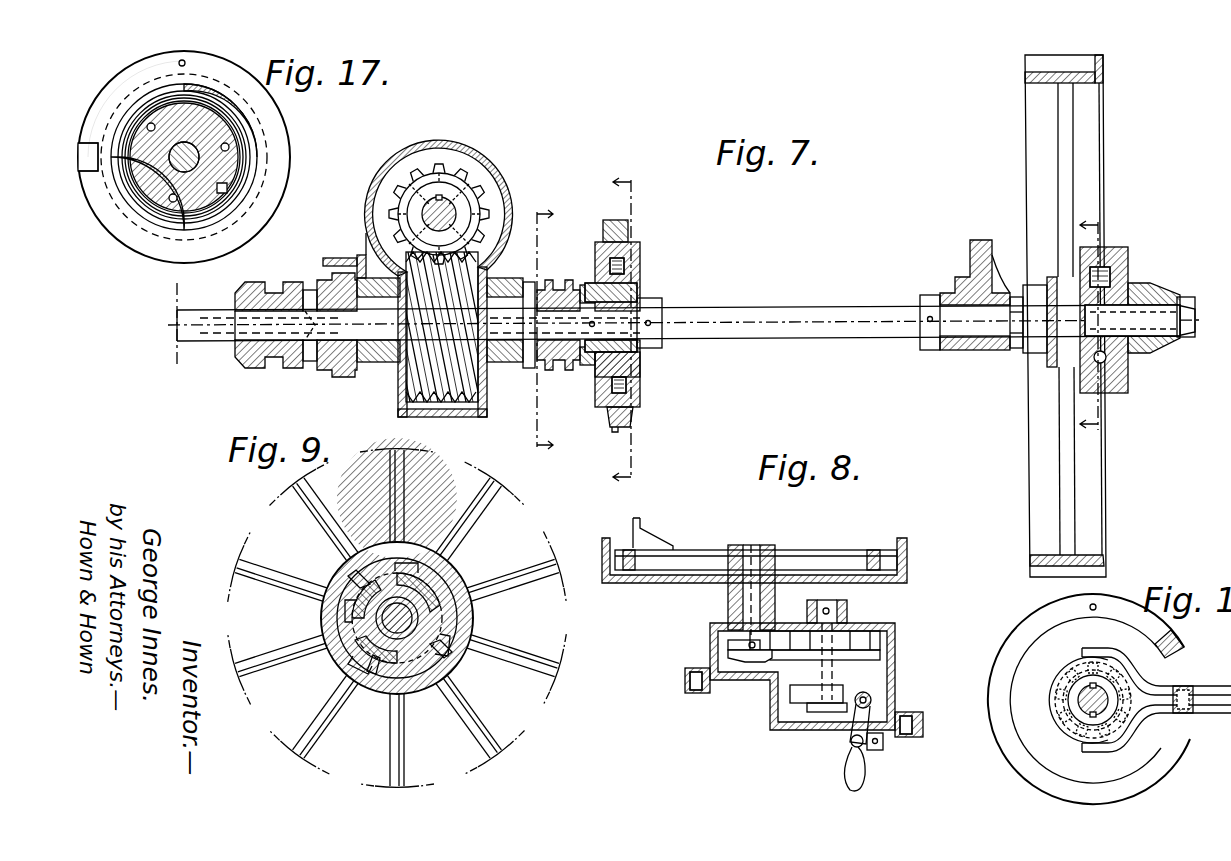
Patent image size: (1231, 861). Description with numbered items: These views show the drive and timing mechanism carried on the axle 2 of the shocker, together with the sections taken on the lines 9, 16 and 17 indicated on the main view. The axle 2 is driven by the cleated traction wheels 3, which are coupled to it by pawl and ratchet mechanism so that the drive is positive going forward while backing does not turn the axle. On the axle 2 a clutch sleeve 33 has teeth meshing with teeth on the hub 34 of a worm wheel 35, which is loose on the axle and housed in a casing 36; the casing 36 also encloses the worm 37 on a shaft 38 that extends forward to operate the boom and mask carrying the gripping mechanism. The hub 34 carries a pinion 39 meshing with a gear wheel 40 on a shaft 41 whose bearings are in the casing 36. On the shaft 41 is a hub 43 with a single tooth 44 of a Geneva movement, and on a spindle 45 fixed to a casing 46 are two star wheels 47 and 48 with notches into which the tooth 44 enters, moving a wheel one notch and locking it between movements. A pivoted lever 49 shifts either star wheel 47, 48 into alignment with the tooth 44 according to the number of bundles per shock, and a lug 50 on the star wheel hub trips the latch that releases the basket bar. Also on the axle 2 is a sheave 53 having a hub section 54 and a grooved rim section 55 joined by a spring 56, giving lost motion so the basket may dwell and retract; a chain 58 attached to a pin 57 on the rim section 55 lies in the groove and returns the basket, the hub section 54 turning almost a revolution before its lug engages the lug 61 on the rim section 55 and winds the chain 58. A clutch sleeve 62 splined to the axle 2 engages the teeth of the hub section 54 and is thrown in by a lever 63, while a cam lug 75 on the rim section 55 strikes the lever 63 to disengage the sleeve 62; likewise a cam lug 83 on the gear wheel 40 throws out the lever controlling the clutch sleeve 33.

In FIG. 7, the axle 2 is at (822, 326).
In FIG. 17, the axle 2 is at (177, 168).
In FIG. 9, the axle 2 is at (425, 621).
In FIG. 16, the axle 2 is at (1080, 699).
In FIG. 7, the traction wheel 3 is at (1090, 117).
In FIG. 9, the traction wheel 3 is at (396, 612).
In FIG. 7, the section line 9— 9 is at (1089, 324).
In FIG. 7, the section line 16— 16 is at (540, 330).
In FIG. 7, the section line 17— 17 is at (630, 330).
In FIG. 7, the clutch sleeve 33 is at (255, 286).
In FIG. 7, the hub 34 is at (318, 364).
In FIG. 7, the worm wheel 35 is at (437, 403).
In FIG. 7, the casing 36 is at (350, 253).
In FIG. 8, the casing 36 is at (907, 576).
In FIG. 7, the worm 37 is at (462, 208).
In FIG. 7, the shaft 38 is at (430, 212).
In FIG. 7, the pinion 39 is at (340, 378).
In FIG. 8, the gear wheel 40 is at (873, 551).
In FIG. 8, the shaft 41 is at (750, 562).
In FIG. 8, the hub 43 is at (728, 644).
In FIG. 8, the tooth 44 is at (763, 662).
In FIG. 8, the spindle 45 is at (827, 716).
In FIG. 8, the casing 46 is at (847, 628).
In FIG. 8, the star wheel 47 is at (880, 658).
In FIG. 8, the star wheel 48 is at (895, 635).
In FIG. 8, the pivoted lever 49 is at (872, 703).
In FIG. 8, the lug 50 is at (790, 705).
In FIG. 7, the sheave 53 is at (633, 248).
In FIG. 17, the sheave 53 is at (120, 76).
In FIG. 16, the sheave 53 is at (1028, 626).
In FIG. 7, the hub section 54 is at (640, 360).
In FIG. 17, the hub section 54 is at (210, 125).
In FIG. 16, the hub section 54 is at (1033, 731).
In FIG. 7, the grooved rim section 55 is at (633, 426).
In FIG. 17, the grooved rim section 55 is at (270, 202).
In FIG. 16, the grooved rim section 55 is at (1022, 758).
In FIG. 7, the spring 56 is at (624, 266).
In FIG. 17, the spring 56 is at (243, 158).
In FIG. 7, the pin 57 is at (603, 229).
In FIG. 17, the pin 57 is at (185, 60).
In FIG. 16, the pin 57 is at (1090, 605).
In FIG. 7, the chain 58 is at (612, 432).
In FIG. 17, the lug 61 is at (90, 166).
In FIG. 7, the clutch sleeve 62 is at (552, 364).
In FIG. 16, the clutch sleeve 62 is at (1068, 727).
In FIG. 16, the lever 63 is at (1113, 660).
In FIG. 16, the cam lug 75 is at (1180, 672).
In FIG. 8, the cam lug 83 is at (645, 535).